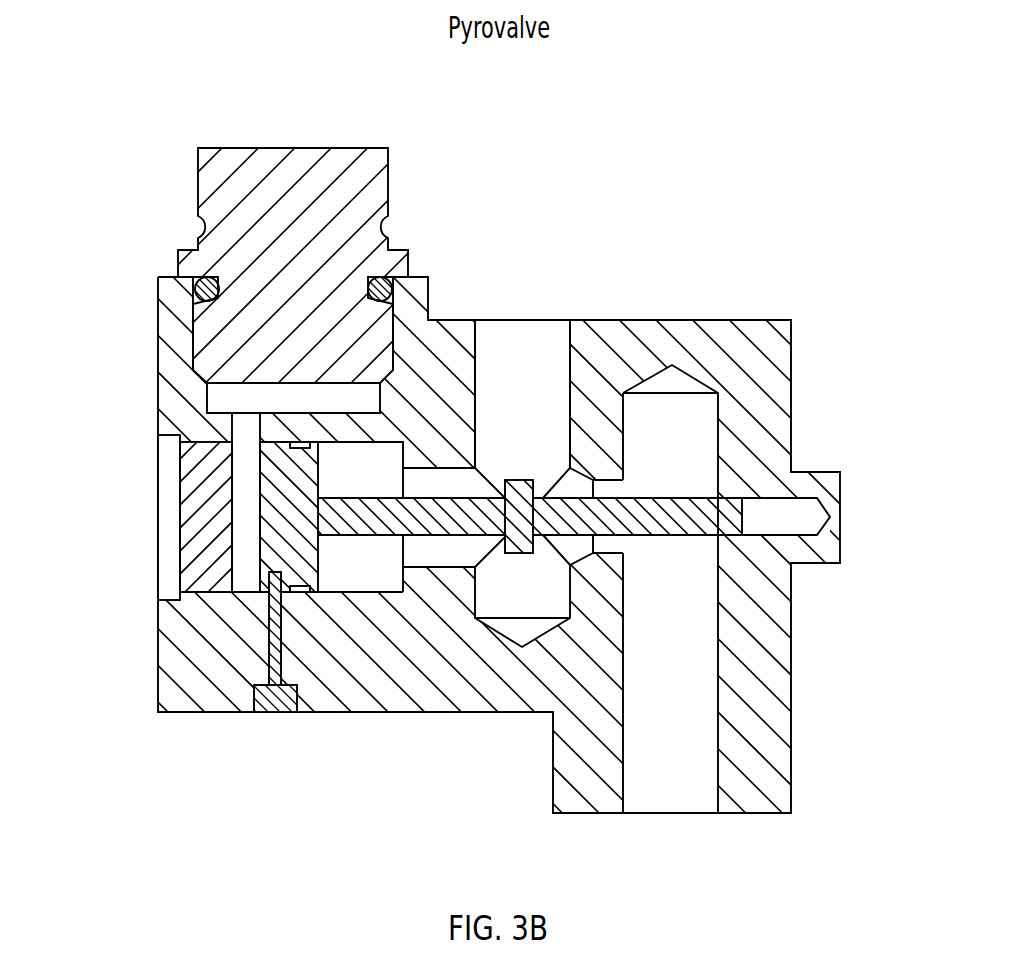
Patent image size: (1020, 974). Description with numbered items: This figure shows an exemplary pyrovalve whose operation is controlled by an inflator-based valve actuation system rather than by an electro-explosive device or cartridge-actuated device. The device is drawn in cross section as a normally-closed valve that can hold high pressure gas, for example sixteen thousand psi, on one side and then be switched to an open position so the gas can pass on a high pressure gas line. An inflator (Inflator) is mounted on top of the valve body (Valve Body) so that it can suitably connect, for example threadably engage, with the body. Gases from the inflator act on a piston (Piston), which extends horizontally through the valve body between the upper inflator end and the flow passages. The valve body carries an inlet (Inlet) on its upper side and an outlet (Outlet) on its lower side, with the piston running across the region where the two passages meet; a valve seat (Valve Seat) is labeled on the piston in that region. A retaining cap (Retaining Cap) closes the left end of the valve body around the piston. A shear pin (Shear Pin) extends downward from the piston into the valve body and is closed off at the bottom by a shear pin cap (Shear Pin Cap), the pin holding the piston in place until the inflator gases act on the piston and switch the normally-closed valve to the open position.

The inflator Inflator is at (295, 136).
The inlet Inlet is at (522, 306).
The retaining cap Retaining Cap is at (168, 465).
The valve seat Valve Seat is at (513, 467).
The shear pin Shear Pin is at (256, 631).
The shear pin cap Shear Pin Cap is at (275, 727).
The piston Piston is at (457, 550).
The valve body Valve Body is at (805, 676).
The outlet Outlet is at (674, 828).